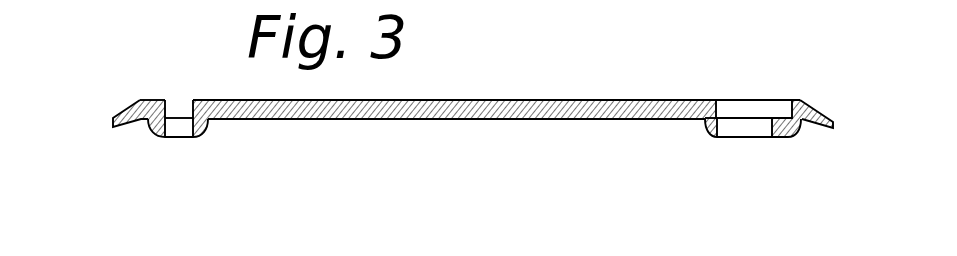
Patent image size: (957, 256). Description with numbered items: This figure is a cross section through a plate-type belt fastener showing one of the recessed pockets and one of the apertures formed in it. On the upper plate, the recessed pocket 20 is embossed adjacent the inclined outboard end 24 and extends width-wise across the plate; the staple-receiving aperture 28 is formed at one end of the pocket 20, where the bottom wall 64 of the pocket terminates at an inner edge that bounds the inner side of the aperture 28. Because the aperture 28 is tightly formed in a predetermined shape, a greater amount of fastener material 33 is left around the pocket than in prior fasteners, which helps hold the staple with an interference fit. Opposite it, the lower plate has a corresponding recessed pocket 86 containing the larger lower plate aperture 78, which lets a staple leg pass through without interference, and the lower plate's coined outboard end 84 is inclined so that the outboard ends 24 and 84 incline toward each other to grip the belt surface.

The recessed pocket 20 is at (120, 160).
The outboard end 24 is at (123, 111).
The staple-receiving aperture 28 is at (192, 105).
The fastener material around the pockets 33 is at (155, 137).
The bottom wall 64 is at (182, 139).
The lower plate aperture 78 is at (782, 101).
The outboard end 84 is at (822, 114).
The recessed pocket 86 is at (728, 158).